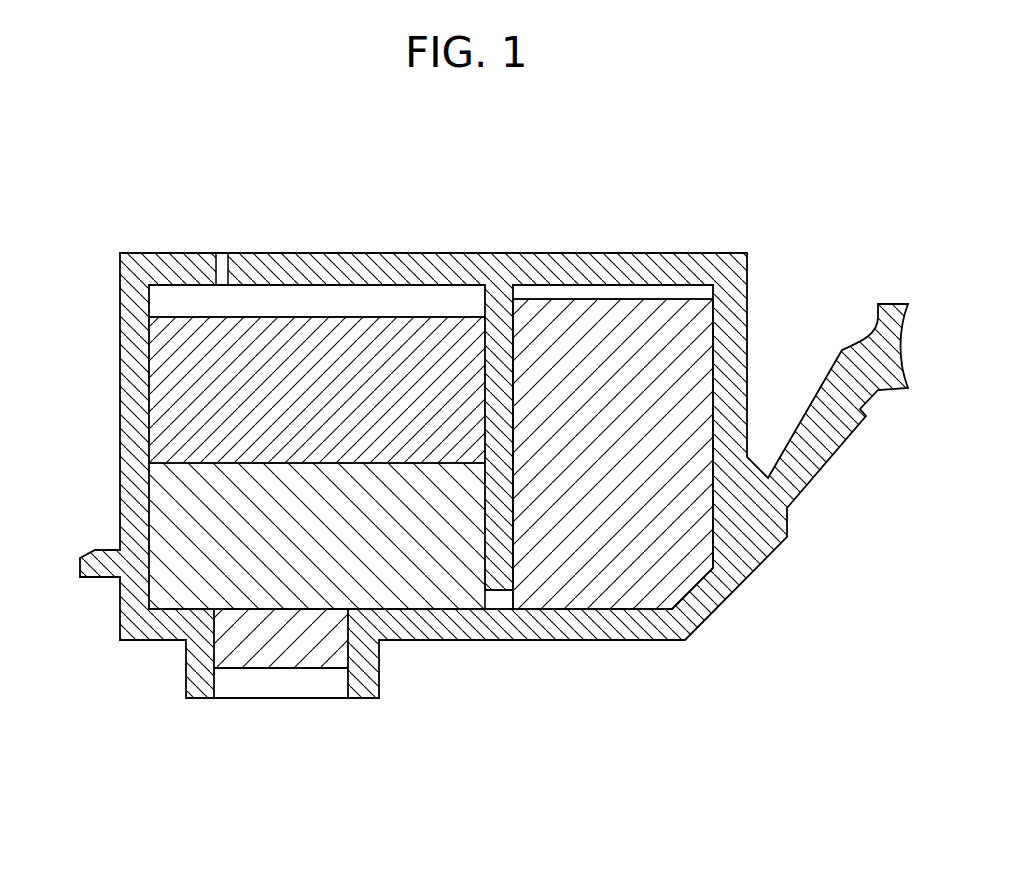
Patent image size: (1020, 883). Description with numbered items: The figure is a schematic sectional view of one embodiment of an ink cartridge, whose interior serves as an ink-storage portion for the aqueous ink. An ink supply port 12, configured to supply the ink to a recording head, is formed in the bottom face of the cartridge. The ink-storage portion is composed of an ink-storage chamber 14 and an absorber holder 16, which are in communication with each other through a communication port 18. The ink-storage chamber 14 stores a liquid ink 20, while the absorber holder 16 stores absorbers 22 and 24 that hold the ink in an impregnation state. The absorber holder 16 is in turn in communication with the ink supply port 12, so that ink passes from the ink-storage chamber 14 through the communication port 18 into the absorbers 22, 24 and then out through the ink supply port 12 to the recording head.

The ink supply port 12 is at (287, 685).
The ink-storage chamber 14 is at (670, 293).
The absorber holder 16 is at (297, 305).
The communication port 18 is at (497, 598).
The liquid ink 20 is at (647, 567).
The absorber 22 is at (173, 507).
The absorber 24 is at (203, 389).